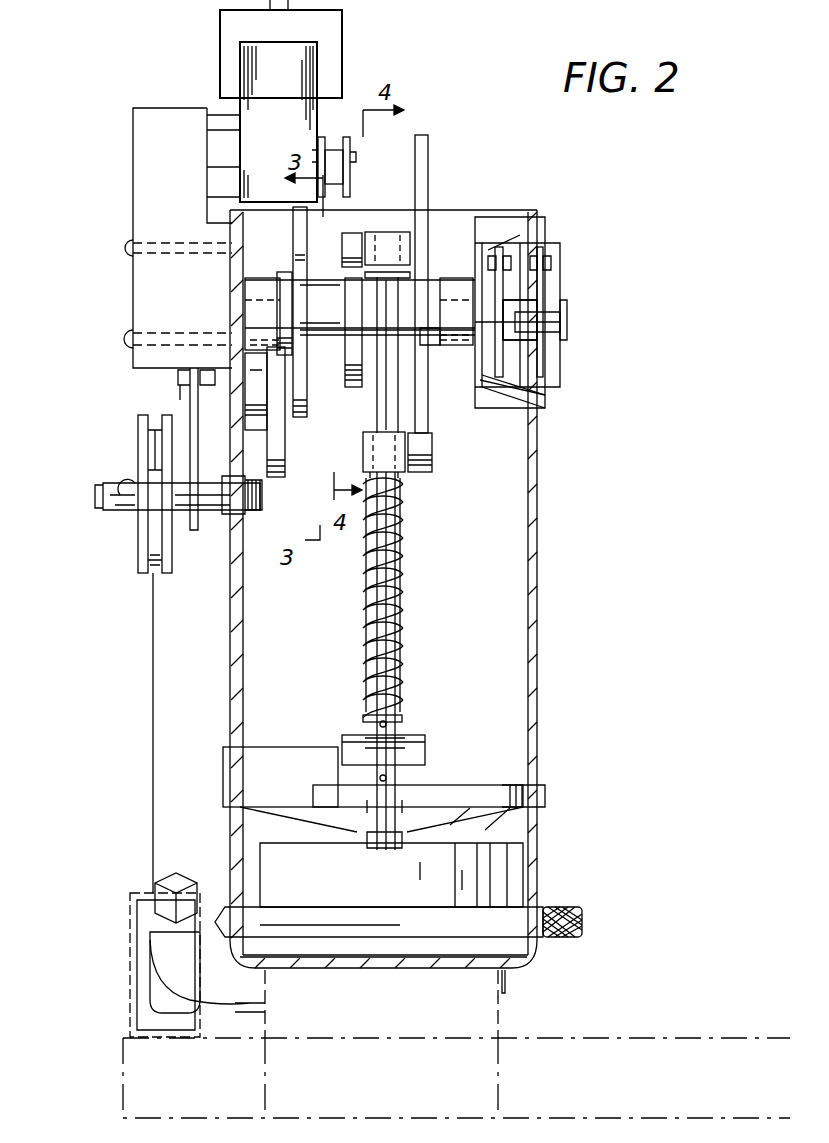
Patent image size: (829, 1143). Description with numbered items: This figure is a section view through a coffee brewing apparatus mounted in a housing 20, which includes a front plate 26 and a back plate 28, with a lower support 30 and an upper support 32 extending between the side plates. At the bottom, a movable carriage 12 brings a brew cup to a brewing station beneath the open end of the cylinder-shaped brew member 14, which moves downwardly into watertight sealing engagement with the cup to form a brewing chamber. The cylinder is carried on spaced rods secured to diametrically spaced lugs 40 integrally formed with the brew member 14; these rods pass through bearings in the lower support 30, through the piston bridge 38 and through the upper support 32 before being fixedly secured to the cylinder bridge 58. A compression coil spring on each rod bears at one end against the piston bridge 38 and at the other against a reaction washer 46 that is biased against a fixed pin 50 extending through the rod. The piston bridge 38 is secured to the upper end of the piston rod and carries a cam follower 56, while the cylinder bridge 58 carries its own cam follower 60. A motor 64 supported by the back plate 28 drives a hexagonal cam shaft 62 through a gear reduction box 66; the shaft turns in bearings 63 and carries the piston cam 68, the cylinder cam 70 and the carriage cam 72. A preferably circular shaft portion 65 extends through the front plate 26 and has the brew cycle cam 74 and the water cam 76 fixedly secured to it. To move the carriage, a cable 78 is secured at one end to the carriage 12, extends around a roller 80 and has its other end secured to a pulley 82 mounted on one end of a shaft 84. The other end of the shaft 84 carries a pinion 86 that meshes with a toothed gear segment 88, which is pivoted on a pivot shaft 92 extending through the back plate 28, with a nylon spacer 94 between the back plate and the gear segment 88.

The movable carriage 12 is at (500, 1010).
The brew member 14 is at (490, 862).
The housing 20 is at (598, 545).
The front plate 26 is at (515, 228).
The back plate 28 is at (232, 320).
The lower support 30 is at (425, 739).
The upper support 32 is at (392, 272).
The piston bridge 38 is at (363, 445).
The lugs 40 is at (355, 795).
The reaction washer 46 is at (405, 716).
The fixed pin 50 is at (402, 720).
The cam follower 56 is at (420, 455).
The cylinder bridge 58 is at (388, 232).
The cam follower 60 is at (352, 262).
The cam shaft 62 is at (428, 345).
The bearings 63 is at (252, 302).
The motor 64 is at (305, 62).
The shaft portion 65 is at (525, 318).
The gear reduction box 66 is at (148, 153).
The piston cam 68 is at (300, 228).
The cylinder cam 70 is at (352, 335).
The carriage cam 72 is at (430, 140).
The brew cycle cam 74 is at (500, 378).
The water cam 76 is at (540, 285).
The cable 78 is at (153, 840).
The roller 80 is at (165, 957).
The pulley 82 is at (157, 518).
The shaft 84 is at (95, 497).
The pinion 86 is at (260, 515).
The gear segment 88 is at (278, 410).
The pivot shaft 92 is at (178, 378).
The nylon spacer 94 is at (255, 428).